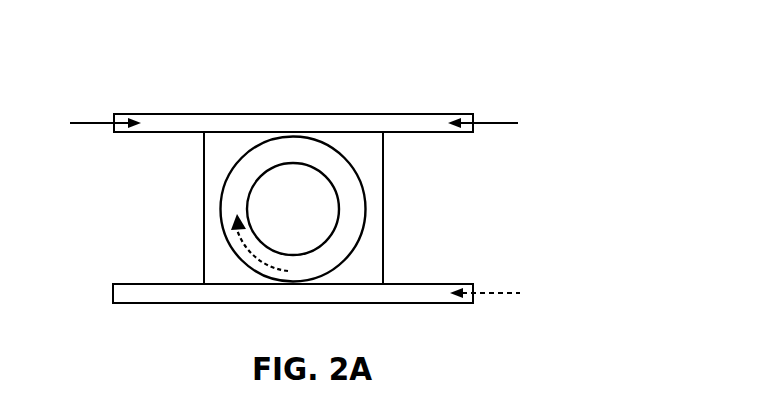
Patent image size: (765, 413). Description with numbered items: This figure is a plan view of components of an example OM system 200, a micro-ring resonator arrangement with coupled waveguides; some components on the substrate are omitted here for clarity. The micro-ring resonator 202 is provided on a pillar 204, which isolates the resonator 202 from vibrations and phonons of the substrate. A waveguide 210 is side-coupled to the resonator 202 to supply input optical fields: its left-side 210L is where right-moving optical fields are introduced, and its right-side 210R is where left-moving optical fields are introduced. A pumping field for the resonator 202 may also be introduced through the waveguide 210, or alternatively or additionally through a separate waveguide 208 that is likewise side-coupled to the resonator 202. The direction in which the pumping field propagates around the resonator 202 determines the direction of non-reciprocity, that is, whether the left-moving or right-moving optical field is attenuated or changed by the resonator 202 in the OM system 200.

The OM system 200 is at (583, 140).
The micro-ring resonator 202 is at (348, 140).
The pillar 204 is at (202, 248).
The separate waveguide 208 is at (420, 304).
The waveguide 210 is at (195, 125).
The left-side of waveguide 210L is at (113, 113).
The right-side of waveguide 210R is at (478, 112).